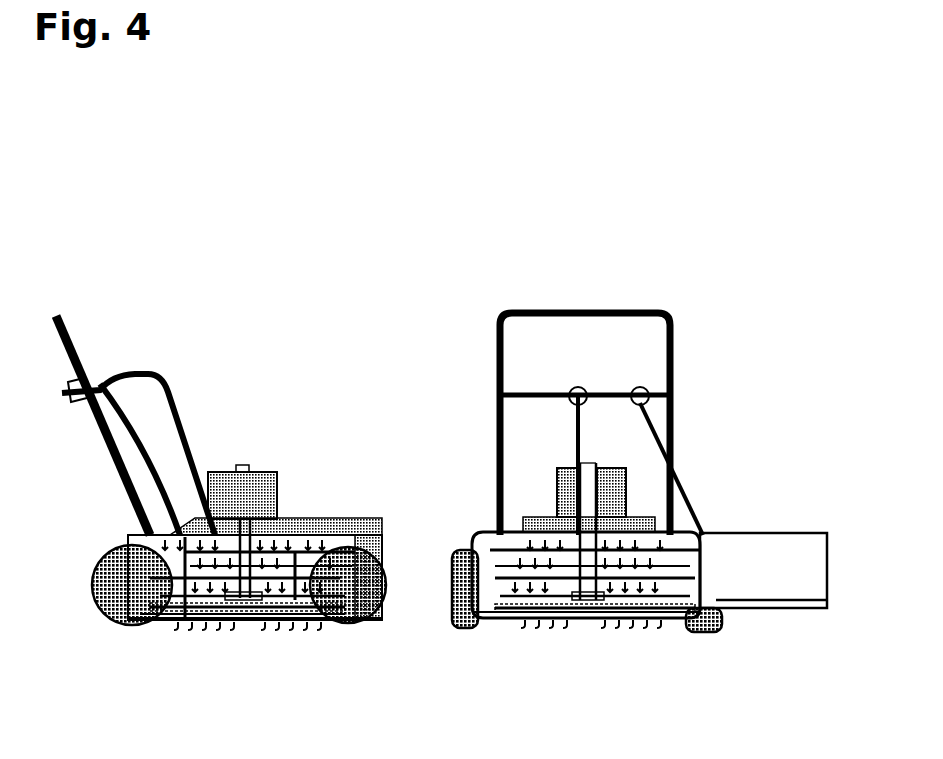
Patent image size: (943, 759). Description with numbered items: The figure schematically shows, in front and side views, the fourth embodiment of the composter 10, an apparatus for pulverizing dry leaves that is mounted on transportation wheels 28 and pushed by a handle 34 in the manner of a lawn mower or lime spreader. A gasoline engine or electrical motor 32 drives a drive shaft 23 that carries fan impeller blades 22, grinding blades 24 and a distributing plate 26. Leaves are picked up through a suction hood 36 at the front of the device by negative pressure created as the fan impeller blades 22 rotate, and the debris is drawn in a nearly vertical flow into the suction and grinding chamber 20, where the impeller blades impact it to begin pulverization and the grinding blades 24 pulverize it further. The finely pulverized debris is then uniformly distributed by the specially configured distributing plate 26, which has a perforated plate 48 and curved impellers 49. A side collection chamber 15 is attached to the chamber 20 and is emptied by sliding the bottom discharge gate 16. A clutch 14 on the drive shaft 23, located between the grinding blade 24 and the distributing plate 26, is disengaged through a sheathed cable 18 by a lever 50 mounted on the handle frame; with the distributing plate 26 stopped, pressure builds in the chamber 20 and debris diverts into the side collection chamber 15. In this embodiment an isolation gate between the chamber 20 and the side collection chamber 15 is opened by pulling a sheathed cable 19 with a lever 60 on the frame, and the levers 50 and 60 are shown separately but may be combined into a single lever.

The composter 10 is at (504, 238).
The clutch 14 is at (520, 622).
The side collection chamber 15 is at (320, 518).
The bottom discharge gate 16 is at (246, 622).
The sheathed cable 18 is at (160, 464).
The sheathed cable 19 is at (155, 378).
The suction and grinding chamber 20 is at (530, 517).
The fan impeller blades 22 is at (472, 542).
The drive shaft 23 is at (557, 470).
The grinding blades 24 is at (472, 560).
The distributing plate 26 is at (472, 596).
The transportation wheels 28 is at (472, 614).
The gasoline engine or electrical motor 32 is at (578, 462).
The handle 34 is at (78, 358).
The suction hood 36 is at (468, 626).
The perforated plate 48 is at (487, 627).
The curved impellers 49 is at (472, 578).
The lever 50 is at (76, 396).
The lever 60 is at (642, 387).